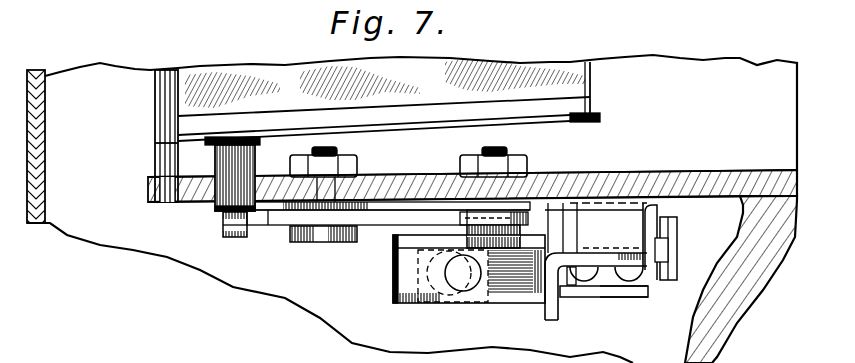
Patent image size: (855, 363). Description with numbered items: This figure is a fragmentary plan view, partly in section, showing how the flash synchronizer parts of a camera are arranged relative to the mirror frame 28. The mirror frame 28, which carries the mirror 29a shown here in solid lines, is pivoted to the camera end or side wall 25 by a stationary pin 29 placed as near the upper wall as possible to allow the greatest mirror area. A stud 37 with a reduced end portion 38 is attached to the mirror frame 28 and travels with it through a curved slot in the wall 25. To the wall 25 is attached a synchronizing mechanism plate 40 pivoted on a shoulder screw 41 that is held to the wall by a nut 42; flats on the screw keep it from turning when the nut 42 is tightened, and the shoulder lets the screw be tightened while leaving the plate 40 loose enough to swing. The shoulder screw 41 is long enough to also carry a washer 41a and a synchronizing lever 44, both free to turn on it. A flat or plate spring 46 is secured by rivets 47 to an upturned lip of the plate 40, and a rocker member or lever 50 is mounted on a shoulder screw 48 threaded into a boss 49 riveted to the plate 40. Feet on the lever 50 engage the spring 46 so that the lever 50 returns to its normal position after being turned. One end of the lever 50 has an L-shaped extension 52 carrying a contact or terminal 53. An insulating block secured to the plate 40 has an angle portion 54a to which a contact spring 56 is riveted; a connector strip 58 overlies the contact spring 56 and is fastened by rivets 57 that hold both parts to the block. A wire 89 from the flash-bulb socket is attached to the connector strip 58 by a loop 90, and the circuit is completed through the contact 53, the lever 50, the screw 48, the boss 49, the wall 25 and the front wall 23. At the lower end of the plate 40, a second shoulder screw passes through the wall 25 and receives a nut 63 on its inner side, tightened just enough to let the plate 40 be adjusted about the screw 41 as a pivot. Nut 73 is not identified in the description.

The front wall 23 is at (718, 337).
The end or side wall 25 is at (671, 180).
The mirror frame 28 is at (560, 121).
The pin 29 is at (165, 203).
The wooden member 29a is at (530, 78).
The stud 37 is at (213, 207).
The reduced end portion 38 is at (233, 238).
The synchronizing mechanism plate 40 is at (433, 203).
The shoulder screw 41 is at (327, 242).
The washer 41a is at (283, 232).
The nut 42 is at (356, 163).
The synchronizing lever 44 is at (388, 222).
The flat or plate spring 46 is at (672, 221).
The rivets 47 is at (668, 244).
The shoulder screw 48 is at (608, 292).
The boss 49 is at (612, 215).
The rocker member or lever 50 is at (496, 303).
The L-shaped extension 52 is at (412, 296).
The contact or terminal 53 is at (459, 282).
The L-shaped or angle portion 54a is at (643, 298).
The contact spring 56 is at (525, 290).
The rivets 57 is at (587, 280).
The connector strip 58 is at (648, 286).
The nut 63 is at (527, 163).
The nut 73 is at (522, 236).
The wire 89 is at (555, 322).
The loop 90 is at (581, 272).